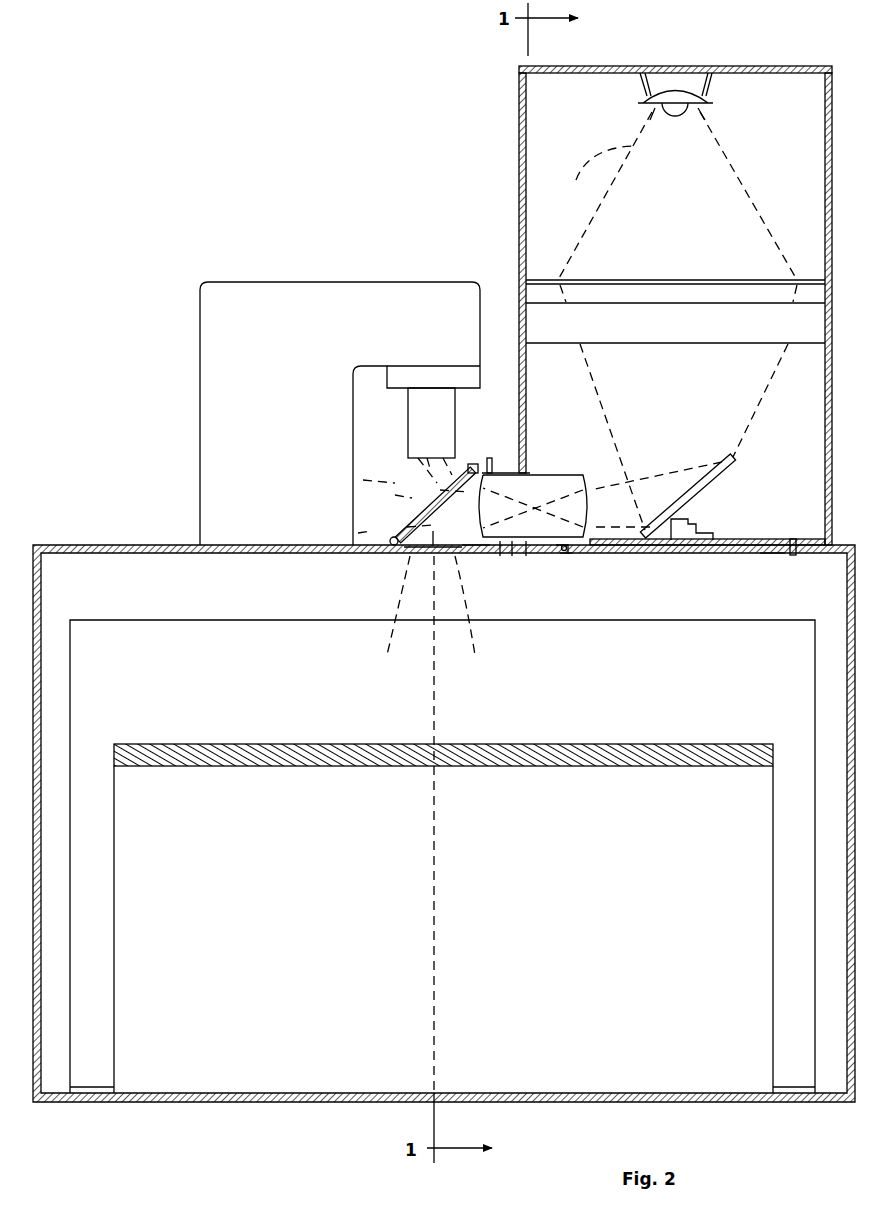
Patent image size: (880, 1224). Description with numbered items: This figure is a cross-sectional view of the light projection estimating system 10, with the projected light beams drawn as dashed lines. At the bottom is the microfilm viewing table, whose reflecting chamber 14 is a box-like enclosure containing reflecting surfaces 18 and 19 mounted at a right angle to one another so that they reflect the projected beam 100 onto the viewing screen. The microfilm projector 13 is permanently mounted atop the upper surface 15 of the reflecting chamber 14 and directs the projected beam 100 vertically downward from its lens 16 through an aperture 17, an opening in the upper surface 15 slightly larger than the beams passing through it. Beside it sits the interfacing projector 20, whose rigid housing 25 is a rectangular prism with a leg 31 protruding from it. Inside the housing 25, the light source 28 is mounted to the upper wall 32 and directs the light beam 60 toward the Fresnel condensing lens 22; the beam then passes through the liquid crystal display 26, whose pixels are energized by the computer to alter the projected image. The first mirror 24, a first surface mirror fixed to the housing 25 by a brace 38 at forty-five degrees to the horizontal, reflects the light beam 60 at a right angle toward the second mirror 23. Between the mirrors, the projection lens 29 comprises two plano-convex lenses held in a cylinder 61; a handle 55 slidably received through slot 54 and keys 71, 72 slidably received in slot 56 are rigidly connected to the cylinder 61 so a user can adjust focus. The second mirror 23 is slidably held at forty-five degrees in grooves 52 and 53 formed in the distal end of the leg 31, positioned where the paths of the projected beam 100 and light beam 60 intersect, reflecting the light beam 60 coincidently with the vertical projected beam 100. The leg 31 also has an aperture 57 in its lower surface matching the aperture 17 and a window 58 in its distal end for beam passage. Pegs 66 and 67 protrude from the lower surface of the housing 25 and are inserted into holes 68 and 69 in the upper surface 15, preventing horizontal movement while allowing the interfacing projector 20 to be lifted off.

The light projection estimating system 10 is at (226, 1104).
The microfilm projector 13 is at (374, 296).
The reflecting chamber 14 is at (152, 545).
The upper surface 15 is at (632, 553).
The lens 16 is at (425, 413).
The aperture 17 is at (418, 556).
The reflecting surface 18 is at (267, 903).
The reflecting surface 19 is at (274, 700).
The interfacing projector 20 is at (517, 141).
The Fresnel condensing lens 22 is at (653, 280).
The second mirror 23 is at (413, 527).
The first mirror 24 is at (722, 467).
The housing 25 is at (823, 176).
The liquid crystal display 26 is at (672, 335).
The light source 28 is at (631, 106).
The projection lens 29 is at (557, 483).
The leg 31 is at (481, 555).
The upper wall 32 is at (757, 66).
The brace 38 is at (693, 533).
The groove 52 is at (463, 467).
The groove 53 is at (393, 549).
The slot 54 is at (467, 470).
The handle 55 is at (490, 458).
The slot 56 is at (528, 555).
The aperture 57 is at (441, 554).
The window 58 is at (416, 497).
The light beam 60 is at (599, 171).
The cylinder 61 is at (519, 536).
The peg 66 is at (566, 552).
The peg 67 is at (794, 554).
The hole 68 is at (567, 557).
The hole 69 is at (772, 553).
The key 71 is at (505, 554).
The key 72 is at (560, 553).
The projected beam 100 is at (414, 462).